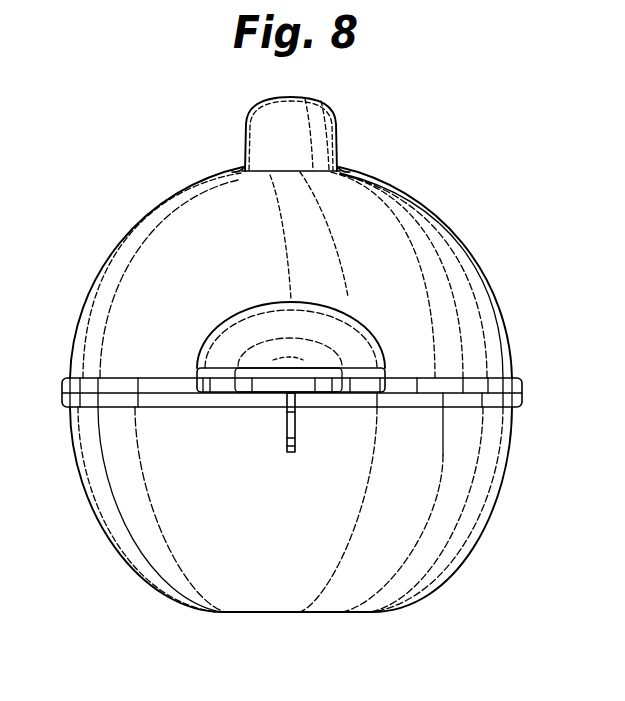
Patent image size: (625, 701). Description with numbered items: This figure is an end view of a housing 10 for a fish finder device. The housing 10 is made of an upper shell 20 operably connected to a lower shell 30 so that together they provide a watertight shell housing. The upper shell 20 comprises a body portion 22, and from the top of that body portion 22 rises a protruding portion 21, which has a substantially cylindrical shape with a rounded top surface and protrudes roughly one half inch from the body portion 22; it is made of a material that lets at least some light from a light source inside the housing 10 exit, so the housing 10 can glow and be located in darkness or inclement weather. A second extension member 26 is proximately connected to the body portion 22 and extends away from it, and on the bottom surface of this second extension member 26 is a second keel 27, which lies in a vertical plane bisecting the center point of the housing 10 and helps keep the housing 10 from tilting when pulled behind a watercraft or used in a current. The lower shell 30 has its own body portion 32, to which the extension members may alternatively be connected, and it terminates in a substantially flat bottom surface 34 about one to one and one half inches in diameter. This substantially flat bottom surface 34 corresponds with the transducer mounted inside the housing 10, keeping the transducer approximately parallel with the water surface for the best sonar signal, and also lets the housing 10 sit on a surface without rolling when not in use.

The housing 10 is at (122, 81).
The upper shell 20 is at (126, 234).
The protruding portion 21 is at (315, 150).
The body portion 22 is at (263, 258).
The second extension member 26 is at (260, 330).
The second keel 27 is at (293, 440).
The lower shell 30 is at (449, 516).
The body portion 32 is at (249, 502).
The substantially flat bottom surface 34 is at (276, 614).